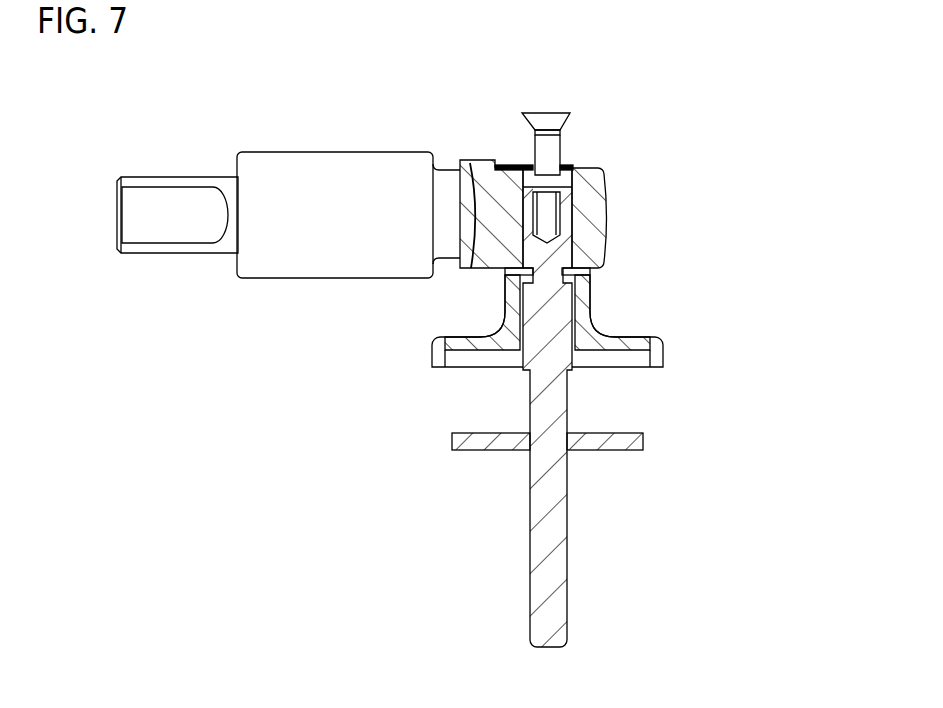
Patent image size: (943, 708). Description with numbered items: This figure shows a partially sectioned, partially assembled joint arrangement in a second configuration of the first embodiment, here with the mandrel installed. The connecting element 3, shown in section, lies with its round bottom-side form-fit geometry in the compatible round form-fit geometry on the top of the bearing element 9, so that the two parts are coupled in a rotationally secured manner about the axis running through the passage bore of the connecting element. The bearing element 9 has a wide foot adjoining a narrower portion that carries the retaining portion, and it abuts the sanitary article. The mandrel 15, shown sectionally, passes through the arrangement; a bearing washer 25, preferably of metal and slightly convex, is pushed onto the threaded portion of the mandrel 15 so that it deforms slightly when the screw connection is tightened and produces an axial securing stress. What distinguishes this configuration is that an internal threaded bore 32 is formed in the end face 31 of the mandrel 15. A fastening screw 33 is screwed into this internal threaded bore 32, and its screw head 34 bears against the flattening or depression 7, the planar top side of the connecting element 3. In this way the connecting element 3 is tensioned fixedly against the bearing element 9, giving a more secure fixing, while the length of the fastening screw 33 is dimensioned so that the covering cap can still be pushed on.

The connecting element 3 is at (596, 152).
The flattening or depression 7 is at (507, 168).
The bearing element 9 is at (655, 325).
The mandrel 15 is at (563, 297).
The bearing washer 25 is at (633, 441).
The end face 31 is at (527, 168).
The internal threaded bore 32 is at (558, 209).
The fastening screw 33 is at (561, 137).
The screw head 34 is at (540, 112).